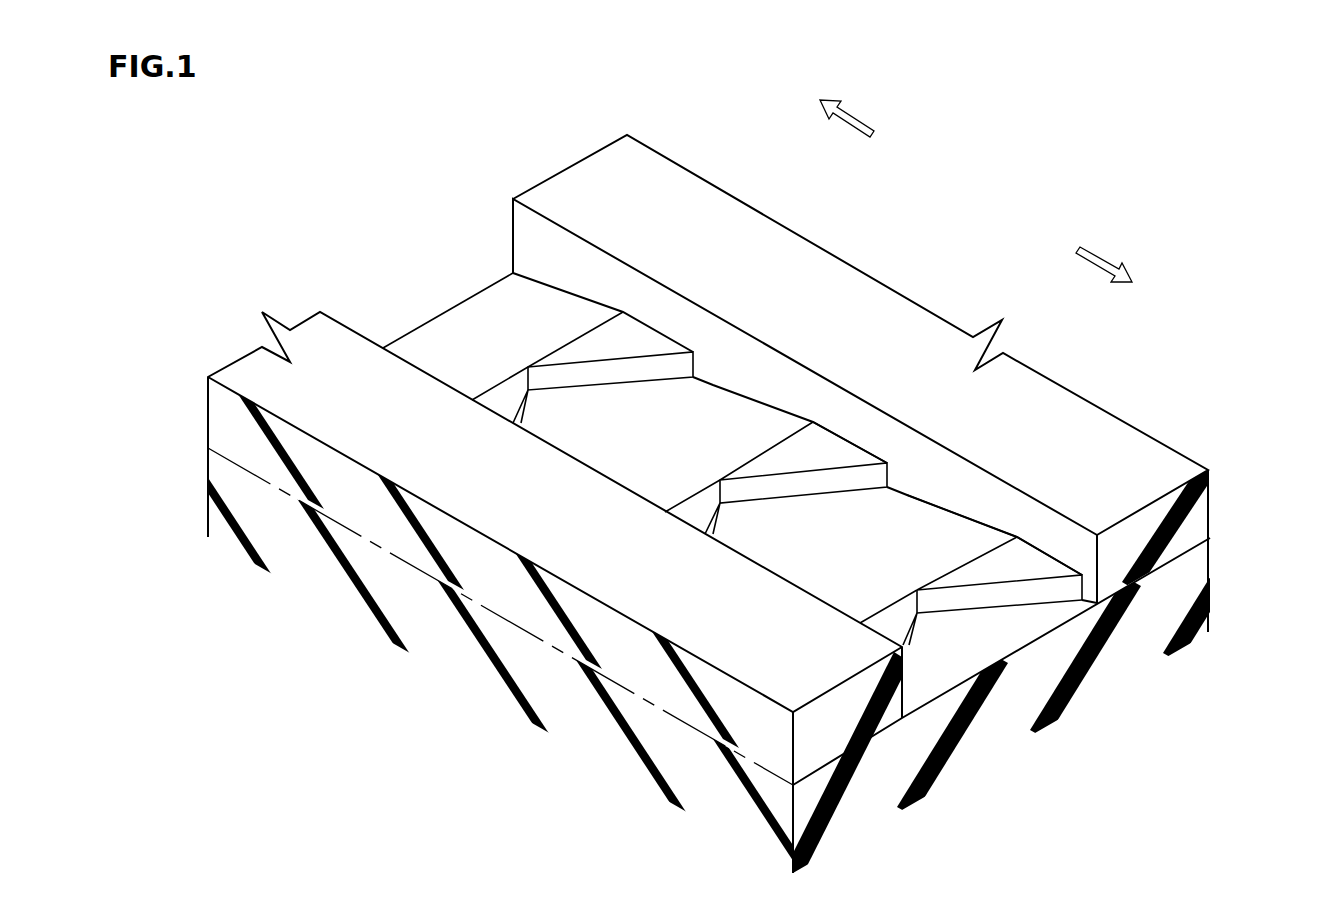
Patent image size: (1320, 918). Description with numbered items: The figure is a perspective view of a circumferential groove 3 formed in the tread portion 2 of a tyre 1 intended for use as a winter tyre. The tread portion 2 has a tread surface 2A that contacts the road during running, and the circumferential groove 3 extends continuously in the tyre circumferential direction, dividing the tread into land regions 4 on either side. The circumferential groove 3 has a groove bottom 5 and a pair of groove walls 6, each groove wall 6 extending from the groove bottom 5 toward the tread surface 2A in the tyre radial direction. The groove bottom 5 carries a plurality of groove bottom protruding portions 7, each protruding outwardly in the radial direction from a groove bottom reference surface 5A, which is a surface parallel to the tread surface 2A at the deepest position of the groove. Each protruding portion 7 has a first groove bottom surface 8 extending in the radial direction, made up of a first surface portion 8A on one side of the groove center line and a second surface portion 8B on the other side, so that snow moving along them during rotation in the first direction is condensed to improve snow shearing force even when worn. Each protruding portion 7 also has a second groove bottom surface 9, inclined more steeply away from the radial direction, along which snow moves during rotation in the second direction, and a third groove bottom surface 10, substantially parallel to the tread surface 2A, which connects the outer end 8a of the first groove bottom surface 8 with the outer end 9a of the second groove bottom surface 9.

The tyre 1 is at (982, 152).
The tread portion 2 is at (807, 223).
The tread surface 2A is at (658, 240).
The circumferential groove 3 is at (395, 243).
The land regions 4 is at (612, 188).
The groove bottom 5 is at (550, 347).
The groove bottom reference surface 5A is at (1162, 568).
The groove walls 6 is at (604, 458).
The groove bottom protruding portions 7 is at (740, 382).
The first groove bottom surface 8 is at (1262, 743).
The first surface portion 8A is at (908, 638).
The second surface portion 8B is at (997, 595).
The outer end of first groove bottom surface 8a is at (960, 585).
The second groove bottom surface 9 is at (837, 574).
The outer end of second groove bottom surface 9a is at (950, 568).
The third groove bottom surface 10 is at (1003, 557).